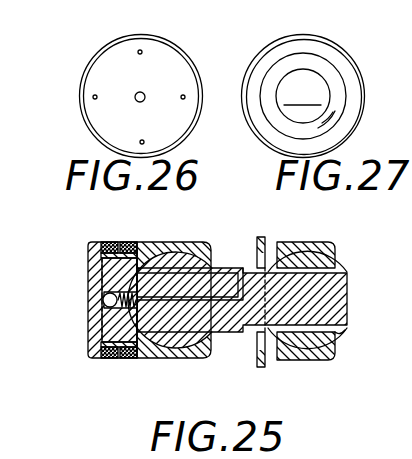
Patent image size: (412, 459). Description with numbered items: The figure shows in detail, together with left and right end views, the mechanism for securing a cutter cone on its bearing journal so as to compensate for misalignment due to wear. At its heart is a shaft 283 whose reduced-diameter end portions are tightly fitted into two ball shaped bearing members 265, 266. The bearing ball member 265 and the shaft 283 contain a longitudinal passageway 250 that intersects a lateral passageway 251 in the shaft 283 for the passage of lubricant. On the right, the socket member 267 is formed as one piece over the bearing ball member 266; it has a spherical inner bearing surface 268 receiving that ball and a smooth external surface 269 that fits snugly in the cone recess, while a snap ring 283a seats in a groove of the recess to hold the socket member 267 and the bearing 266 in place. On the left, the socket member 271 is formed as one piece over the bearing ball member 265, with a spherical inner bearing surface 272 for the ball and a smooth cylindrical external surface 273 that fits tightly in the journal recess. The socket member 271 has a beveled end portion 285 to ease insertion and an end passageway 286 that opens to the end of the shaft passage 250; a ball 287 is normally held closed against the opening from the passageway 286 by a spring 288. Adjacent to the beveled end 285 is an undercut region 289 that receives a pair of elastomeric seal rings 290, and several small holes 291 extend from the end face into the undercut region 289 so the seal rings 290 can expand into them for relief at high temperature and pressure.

In FIG. 25, the longitudinal passageway 250 is at (222, 267).
In FIG. 25, the lateral passageway 251 is at (241, 267).
In FIG. 25, the bearing ball member 265 is at (186, 259).
In FIG. 27, the bearing ball member 266 is at (340, 67).
In FIG. 25, the bearing ball member 266 is at (277, 250).
In FIG. 27, the socket member 267 is at (372, 93).
In FIG. 25, the socket member 267 is at (382, 240).
In FIG. 25, the spherical inner bearing surface 268 is at (326, 338).
In FIG. 27, the external surface 269 is at (278, 46).
In FIG. 25, the external surface 269 is at (296, 360).
In FIG. 25, the socket member 271 is at (139, 368).
In FIG. 25, the spherical inner bearing surface 272 is at (173, 340).
In FIG. 25, the cylindrical external surface 273 is at (150, 240).
In FIG. 27, the shaft 283 is at (303, 94).
In FIG. 25, the shaft 283 is at (233, 333).
In FIG. 25, the snap ring 283a is at (256, 238).
In FIG. 25, the beveled end portion 285 is at (92, 362).
In FIG. 26, the end passageway 286 is at (145, 101).
In FIG. 25, the end passageway 286 is at (104, 306).
In FIG. 25, the ball 287 is at (98, 296).
In FIG. 25, the spring 288 is at (108, 318).
In FIG. 25, the undercut region 289 is at (105, 252).
In FIG. 25, the seal rings 290 is at (110, 357).
In FIG. 26, the small holes 291 is at (138, 52).
In FIG. 25, the small holes 291 is at (92, 249).